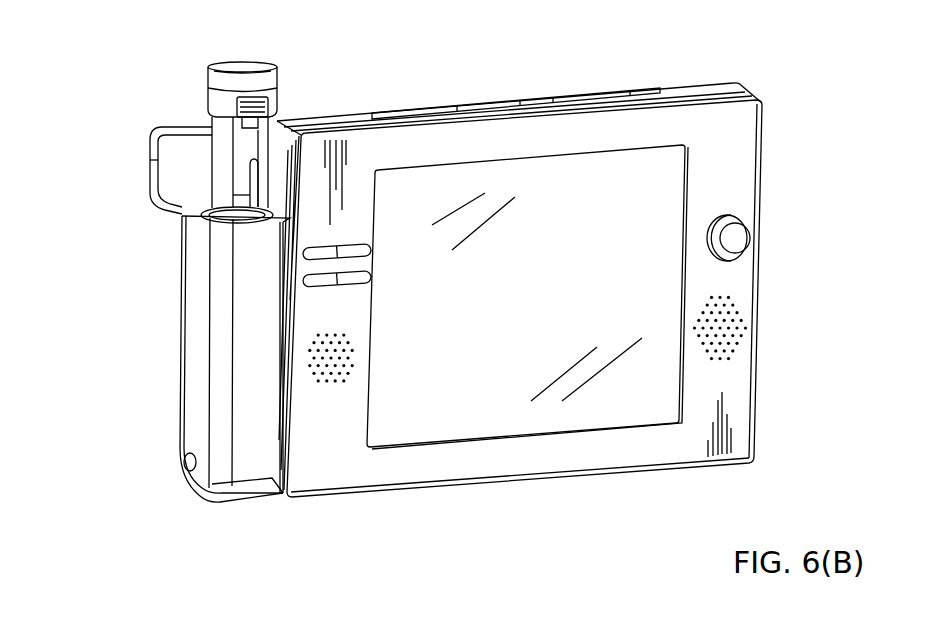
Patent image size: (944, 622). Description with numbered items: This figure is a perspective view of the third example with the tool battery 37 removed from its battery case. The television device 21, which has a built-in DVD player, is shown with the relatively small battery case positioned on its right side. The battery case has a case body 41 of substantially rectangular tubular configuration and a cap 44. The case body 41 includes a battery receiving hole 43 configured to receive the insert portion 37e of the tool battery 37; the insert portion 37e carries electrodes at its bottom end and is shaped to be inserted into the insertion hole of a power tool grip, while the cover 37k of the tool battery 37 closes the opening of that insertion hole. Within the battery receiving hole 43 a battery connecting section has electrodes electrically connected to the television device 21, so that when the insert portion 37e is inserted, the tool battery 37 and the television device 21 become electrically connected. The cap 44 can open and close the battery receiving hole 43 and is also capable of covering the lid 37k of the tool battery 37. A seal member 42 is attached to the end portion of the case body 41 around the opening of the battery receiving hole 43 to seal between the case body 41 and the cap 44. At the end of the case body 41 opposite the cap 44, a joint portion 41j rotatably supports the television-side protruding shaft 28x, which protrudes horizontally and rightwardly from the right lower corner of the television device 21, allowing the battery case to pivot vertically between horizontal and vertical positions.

The television device 21 is at (604, 92).
The tool battery 37 is at (259, 61).
The cover 37k is at (223, 100).
The insert portion 37e is at (238, 164).
The cap 44 is at (151, 159).
The seal member 42 is at (204, 223).
The battery receiving hole 43 is at (258, 228).
The case body 41 is at (196, 373).
The joint portion 41j is at (245, 484).
The television-side protruding shaft 28x is at (189, 466).